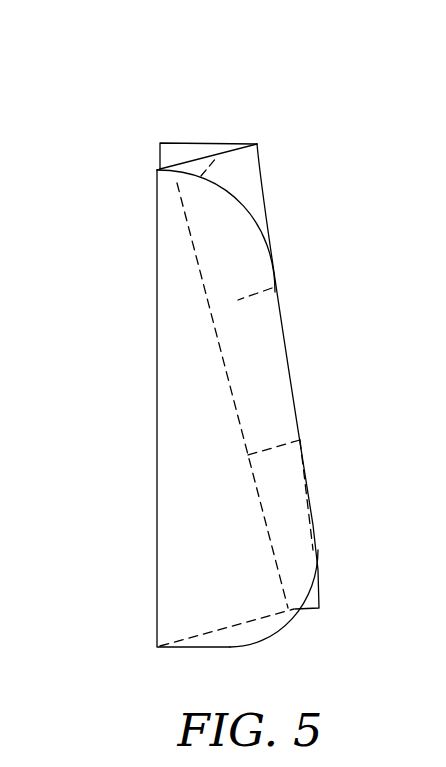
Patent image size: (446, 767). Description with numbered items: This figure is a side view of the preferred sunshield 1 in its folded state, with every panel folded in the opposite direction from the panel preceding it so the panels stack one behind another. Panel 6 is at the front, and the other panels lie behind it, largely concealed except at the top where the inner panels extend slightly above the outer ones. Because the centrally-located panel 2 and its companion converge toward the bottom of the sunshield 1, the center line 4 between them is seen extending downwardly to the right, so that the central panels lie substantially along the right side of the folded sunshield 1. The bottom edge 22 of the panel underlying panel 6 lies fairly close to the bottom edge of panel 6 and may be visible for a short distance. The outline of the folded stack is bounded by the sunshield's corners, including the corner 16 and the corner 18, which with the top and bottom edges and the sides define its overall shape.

The sunshield 1 is at (192, 88).
The panel 2 is at (272, 288).
The center line 4 is at (300, 440).
The panel 6 is at (210, 548).
The corner 16 is at (272, 633).
The corner 18 is at (225, 185).
The bottom edge 22 is at (237, 627).